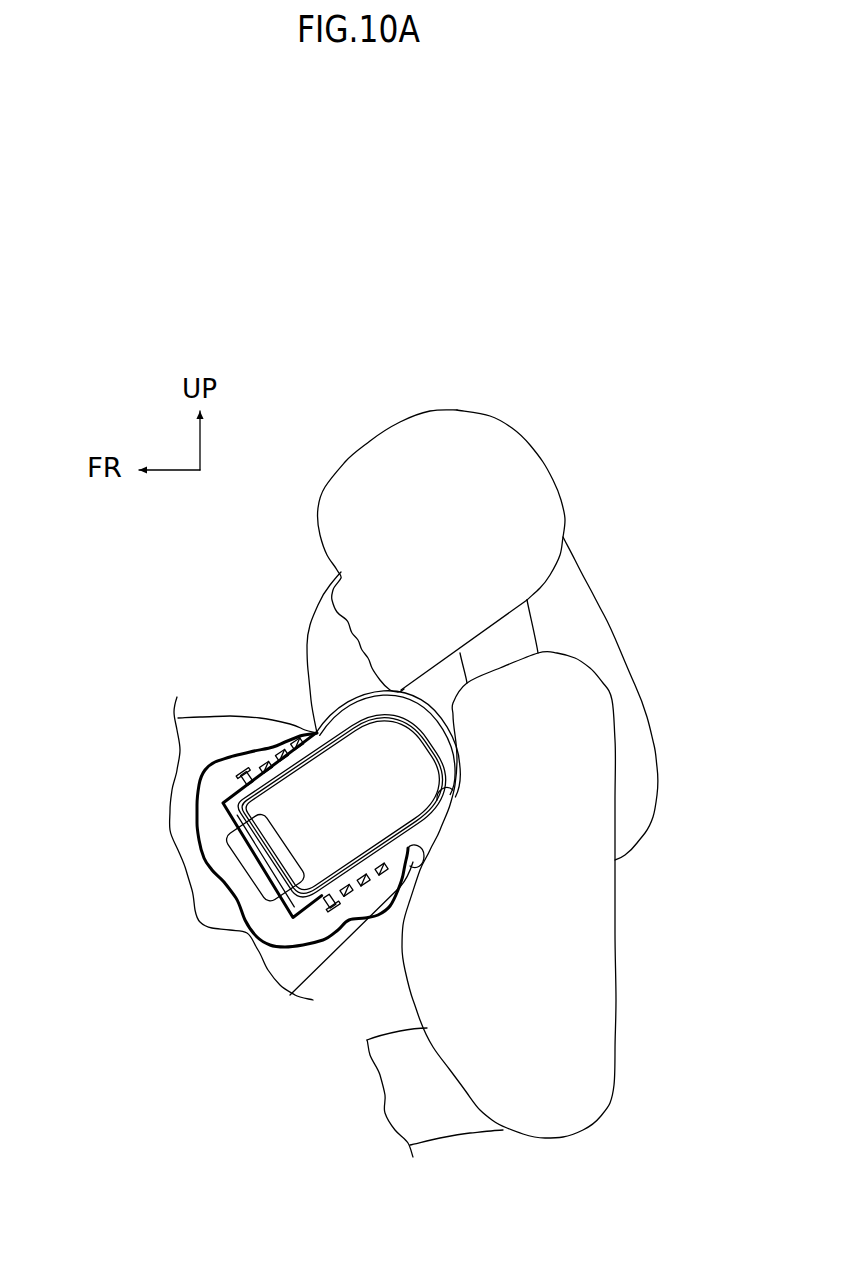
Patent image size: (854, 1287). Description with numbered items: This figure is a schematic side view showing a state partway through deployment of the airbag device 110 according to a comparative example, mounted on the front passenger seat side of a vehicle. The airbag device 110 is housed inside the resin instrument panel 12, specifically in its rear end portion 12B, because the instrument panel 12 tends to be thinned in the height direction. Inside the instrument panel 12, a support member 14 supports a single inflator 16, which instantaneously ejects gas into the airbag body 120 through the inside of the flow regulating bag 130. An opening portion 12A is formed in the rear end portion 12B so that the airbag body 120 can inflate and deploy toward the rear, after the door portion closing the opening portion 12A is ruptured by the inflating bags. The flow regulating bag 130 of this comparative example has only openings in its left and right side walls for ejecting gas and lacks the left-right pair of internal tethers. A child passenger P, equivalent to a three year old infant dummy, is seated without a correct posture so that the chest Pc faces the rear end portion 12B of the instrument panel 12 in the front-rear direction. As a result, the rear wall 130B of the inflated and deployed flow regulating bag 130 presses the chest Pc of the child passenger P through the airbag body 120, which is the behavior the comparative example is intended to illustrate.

The instrument panel 12 is at (197, 714).
The opening portion 12A is at (435, 845).
The rear end portion 12B is at (417, 860).
The support member 14 is at (223, 802).
The inflator 16 is at (248, 878).
The airbag device 110 is at (382, 955).
The airbag body 120 is at (294, 636).
The flow regulating bag 130 is at (415, 749).
The rear wall 130B is at (457, 778).
The child passenger P is at (506, 419).
The chest Pc is at (457, 803).